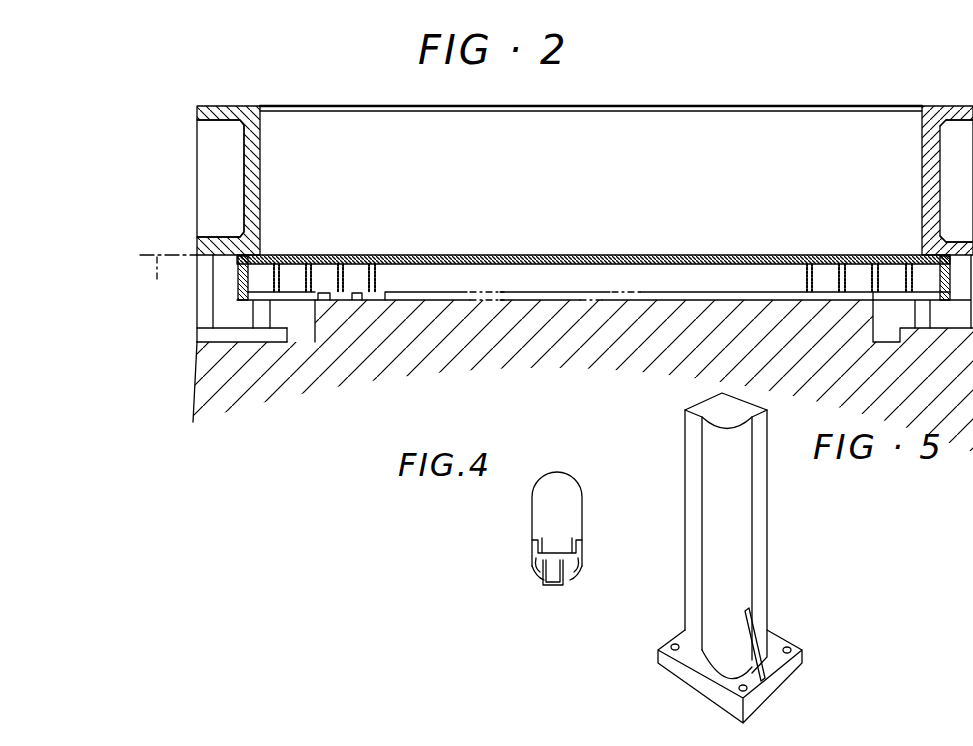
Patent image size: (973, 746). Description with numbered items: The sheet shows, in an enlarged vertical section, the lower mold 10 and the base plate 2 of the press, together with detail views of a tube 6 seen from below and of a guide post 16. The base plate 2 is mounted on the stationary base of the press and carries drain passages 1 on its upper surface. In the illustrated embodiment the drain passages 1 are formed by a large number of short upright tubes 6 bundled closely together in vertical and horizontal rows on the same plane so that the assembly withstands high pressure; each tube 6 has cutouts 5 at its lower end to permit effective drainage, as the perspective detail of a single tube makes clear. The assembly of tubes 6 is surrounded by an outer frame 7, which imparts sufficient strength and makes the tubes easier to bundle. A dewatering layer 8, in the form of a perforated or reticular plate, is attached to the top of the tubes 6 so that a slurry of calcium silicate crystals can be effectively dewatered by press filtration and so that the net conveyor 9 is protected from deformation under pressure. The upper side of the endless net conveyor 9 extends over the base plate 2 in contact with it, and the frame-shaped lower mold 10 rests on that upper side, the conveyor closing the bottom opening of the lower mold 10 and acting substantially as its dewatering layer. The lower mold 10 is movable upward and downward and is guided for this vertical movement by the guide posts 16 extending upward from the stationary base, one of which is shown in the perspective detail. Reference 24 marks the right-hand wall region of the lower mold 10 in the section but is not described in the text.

In FIG. 2, the drain passage 1 is at (290, 275).
In FIG. 2, the base plate 2 is at (617, 272).
In FIG. 2, the cutout 5 is at (355, 302).
In FIG. 4, the cutout 5 is at (537, 549).
In FIG. 2, the tube 6 is at (317, 278).
In FIG. 4, the tube 6 is at (540, 506).
In FIG. 2, the outer frame 7 is at (237, 287).
In FIG. 2, the dewatering layer 8 is at (412, 257).
In FIG. 2, the net conveyor 9 is at (168, 278).
In FIG. 2, the lower mold 10 is at (607, 105).
In FIG. 2, the guide post 16 is at (227, 277).
In FIG. 5, the guide post 16 is at (740, 537).
In FIG. 2, the side wall 24 is at (937, 113).